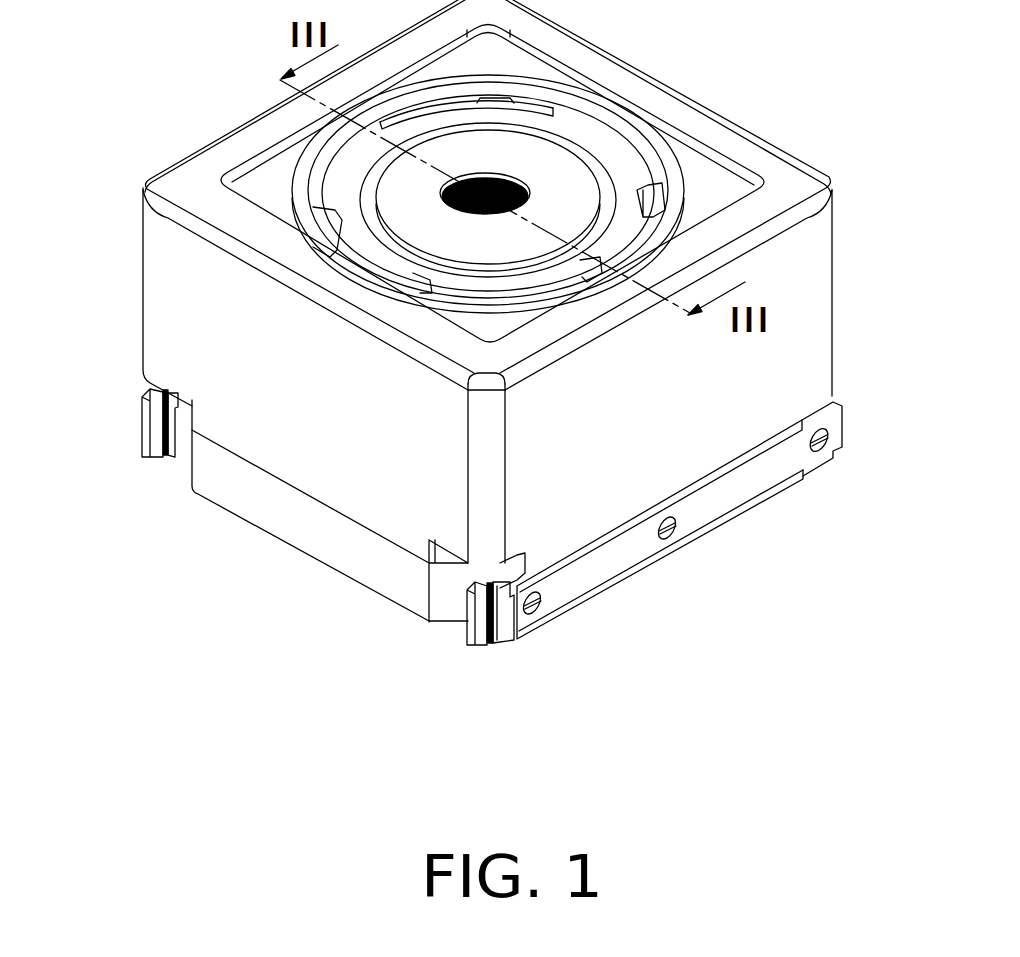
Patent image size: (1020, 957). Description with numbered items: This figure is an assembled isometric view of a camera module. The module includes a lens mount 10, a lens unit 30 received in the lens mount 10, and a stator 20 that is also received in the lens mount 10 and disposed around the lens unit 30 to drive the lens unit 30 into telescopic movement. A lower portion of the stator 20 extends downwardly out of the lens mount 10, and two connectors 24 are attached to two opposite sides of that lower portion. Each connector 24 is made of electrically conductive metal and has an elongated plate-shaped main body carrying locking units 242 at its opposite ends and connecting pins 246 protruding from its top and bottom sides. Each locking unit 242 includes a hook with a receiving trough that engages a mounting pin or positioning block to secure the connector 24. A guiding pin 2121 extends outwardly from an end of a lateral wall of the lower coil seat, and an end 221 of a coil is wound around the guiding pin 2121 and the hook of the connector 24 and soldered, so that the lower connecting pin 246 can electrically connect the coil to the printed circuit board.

The lens mount 10 is at (796, 293).
The stator 20 is at (705, 178).
The lens unit 30 is at (561, 167).
The connector 24 is at (710, 497).
The connecting pin 246 is at (817, 460).
The locking unit 242 is at (473, 623).
The end of coil 221 is at (157, 438).
The guiding pin 2121 is at (466, 587).